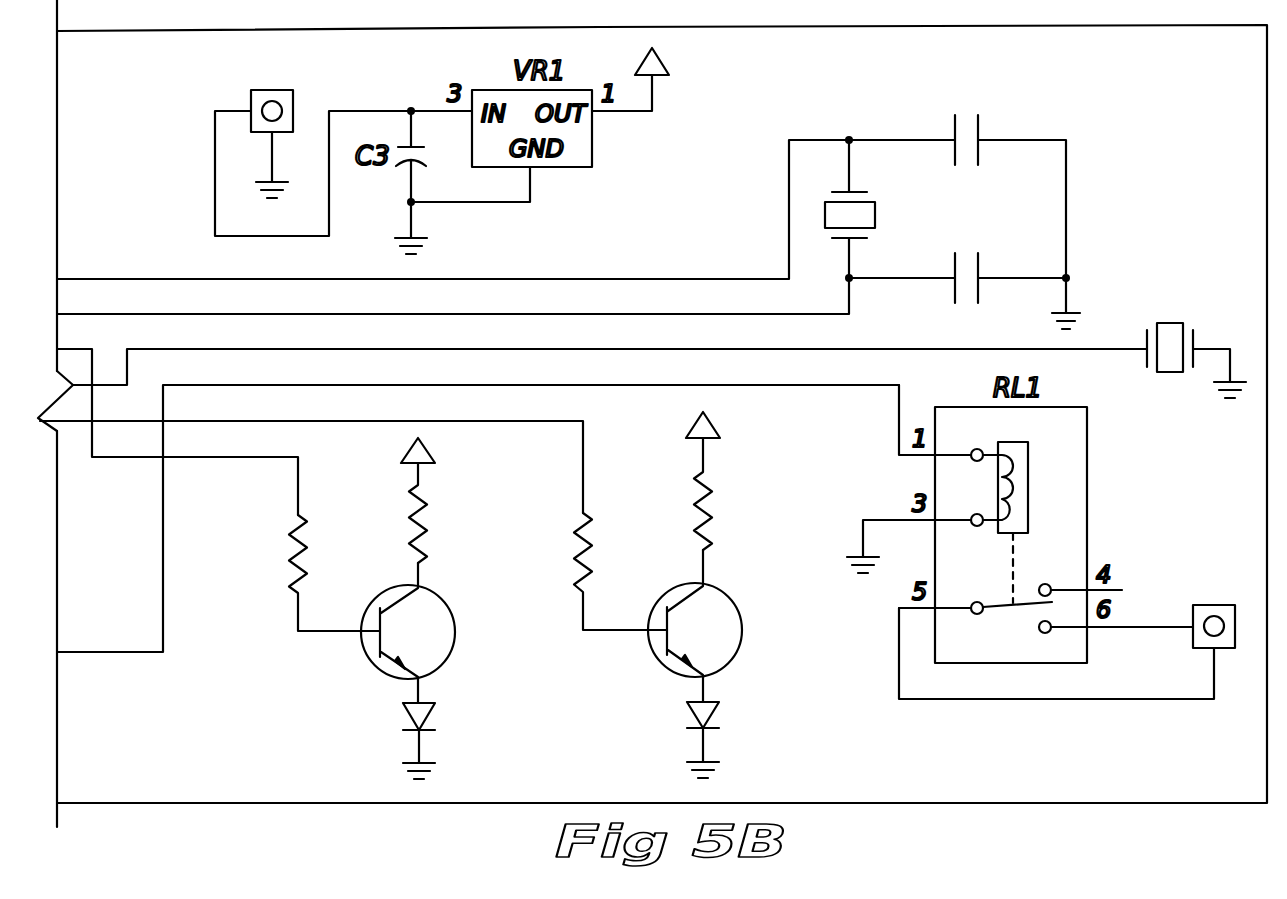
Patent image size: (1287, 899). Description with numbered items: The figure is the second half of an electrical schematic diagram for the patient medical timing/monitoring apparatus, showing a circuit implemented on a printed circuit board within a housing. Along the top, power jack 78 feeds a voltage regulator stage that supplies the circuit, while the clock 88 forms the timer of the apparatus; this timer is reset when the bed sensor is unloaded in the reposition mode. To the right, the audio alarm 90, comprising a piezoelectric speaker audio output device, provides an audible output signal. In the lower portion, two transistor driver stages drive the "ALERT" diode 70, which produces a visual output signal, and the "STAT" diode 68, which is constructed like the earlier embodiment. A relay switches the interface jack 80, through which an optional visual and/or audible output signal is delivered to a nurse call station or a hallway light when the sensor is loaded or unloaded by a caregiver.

The power jack 78 is at (312, 87).
The clock 88 is at (1093, 190).
The audio alarm 90 is at (1200, 303).
The interface jack 80 is at (1250, 592).
The "ALERT" diode 70 is at (377, 740).
The "STAT" diode 68 is at (663, 738).